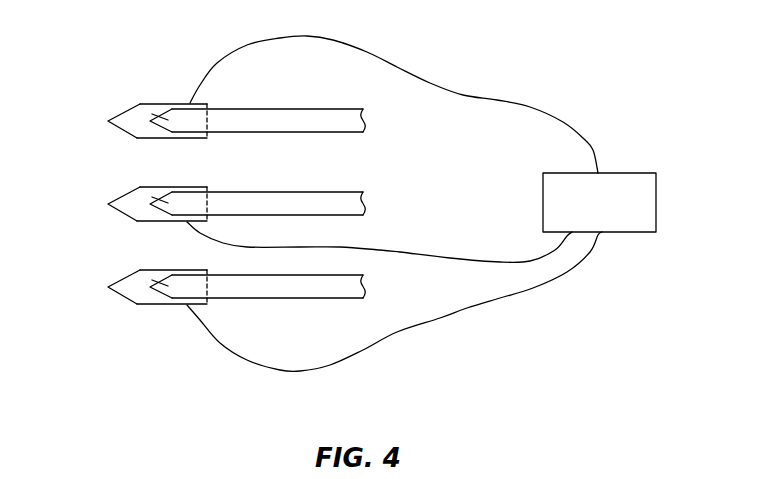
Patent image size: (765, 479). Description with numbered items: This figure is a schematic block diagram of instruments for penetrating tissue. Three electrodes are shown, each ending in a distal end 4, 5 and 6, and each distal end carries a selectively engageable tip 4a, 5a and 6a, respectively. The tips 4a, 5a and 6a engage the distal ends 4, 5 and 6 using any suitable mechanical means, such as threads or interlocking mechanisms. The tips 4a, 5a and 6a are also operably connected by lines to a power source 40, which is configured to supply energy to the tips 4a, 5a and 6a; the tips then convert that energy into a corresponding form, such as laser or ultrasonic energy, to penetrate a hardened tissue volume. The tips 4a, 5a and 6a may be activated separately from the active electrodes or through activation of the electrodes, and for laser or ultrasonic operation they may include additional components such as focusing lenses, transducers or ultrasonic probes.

The distal end 4 is at (138, 104).
The selectively engageable tip 4a is at (127, 118).
The distal end 5 is at (203, 208).
The selectively engageable tip 5a is at (106, 213).
The distal end 6 is at (203, 291).
The selectively engageable tip 6a is at (106, 296).
The power source 40 is at (620, 173).